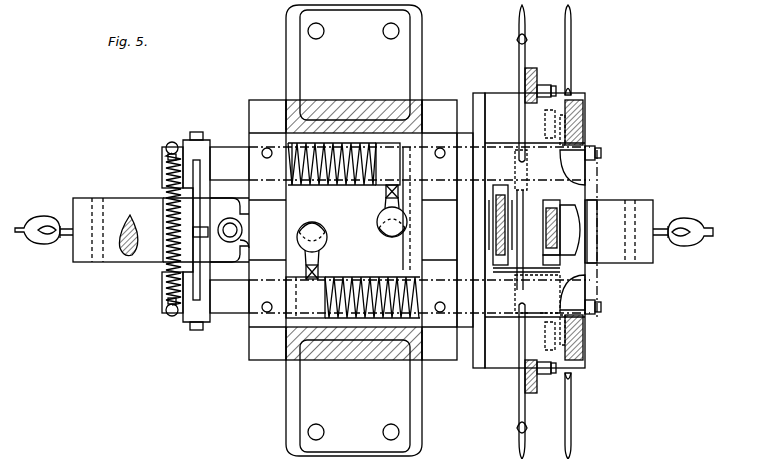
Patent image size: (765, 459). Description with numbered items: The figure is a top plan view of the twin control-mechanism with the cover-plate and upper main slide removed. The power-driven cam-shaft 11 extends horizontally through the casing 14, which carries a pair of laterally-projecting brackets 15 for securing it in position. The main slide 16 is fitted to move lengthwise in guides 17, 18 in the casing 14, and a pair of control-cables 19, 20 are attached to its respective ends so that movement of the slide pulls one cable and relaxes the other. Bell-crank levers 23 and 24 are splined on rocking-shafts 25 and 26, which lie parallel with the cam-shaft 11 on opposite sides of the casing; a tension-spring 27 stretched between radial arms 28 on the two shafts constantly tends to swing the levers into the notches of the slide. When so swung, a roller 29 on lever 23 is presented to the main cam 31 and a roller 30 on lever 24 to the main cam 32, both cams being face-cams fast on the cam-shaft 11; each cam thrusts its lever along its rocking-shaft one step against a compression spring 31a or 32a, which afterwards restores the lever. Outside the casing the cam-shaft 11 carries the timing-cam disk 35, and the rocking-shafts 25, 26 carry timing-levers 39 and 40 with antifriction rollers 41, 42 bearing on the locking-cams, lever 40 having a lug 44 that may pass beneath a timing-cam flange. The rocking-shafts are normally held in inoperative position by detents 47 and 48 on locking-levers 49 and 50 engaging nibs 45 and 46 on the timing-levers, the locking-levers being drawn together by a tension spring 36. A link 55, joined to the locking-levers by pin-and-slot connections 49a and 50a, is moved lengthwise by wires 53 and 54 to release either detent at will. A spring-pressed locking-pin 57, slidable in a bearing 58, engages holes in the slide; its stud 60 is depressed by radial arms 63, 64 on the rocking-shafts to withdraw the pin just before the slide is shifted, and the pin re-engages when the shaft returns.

The power-driven cam-shaft 11 is at (130, 262).
The casing 14 is at (364, 122).
The laterally-projecting brackets 15 is at (400, 47).
The upper main slide 16 is at (124, 198).
The guide 17 is at (267, 230).
The guide 18 is at (439, 230).
The control-cable 19 is at (22, 225).
The control-cable 20 is at (685, 220).
The bell-crank lever 23 is at (319, 273).
The bell-crank lever 24 is at (386, 193).
The rocking-shaft 25 is at (228, 312).
The rocking-shaft 26 is at (226, 154).
The tension-spring 27 is at (166, 232).
The radial arms 28 is at (172, 142).
The roller 29 is at (330, 229).
The roller 30 is at (383, 240).
The main cam 31 is at (310, 200).
The spring 31a is at (362, 320).
The main cam 32 is at (410, 264).
The spring 32a is at (314, 142).
The timing-cam disk 35 is at (530, 296).
The tension spring 36 is at (596, 210).
The timing-lever 39 is at (523, 268).
The timing-lever 40 is at (586, 236).
The antifriction roller 41 is at (503, 188).
The antifriction roller 42 is at (588, 257).
The laterally-projecting lug 44 is at (545, 200).
The nib 45 is at (585, 290).
The nib 46 is at (590, 178).
The detent 47 is at (600, 310).
The detent 48 is at (600, 154).
The locking-lever 49 is at (590, 348).
The pin-and-slot connection 49a is at (588, 330).
The locking-lever 50 is at (580, 118).
The pin-and-slot connection 50a is at (586, 132).
The wire 53 is at (572, 448).
The wire 54 is at (572, 14).
The link 55 is at (575, 193).
The locking-pin 57 is at (240, 222).
The bearing 58 is at (246, 250).
The stud 60 is at (194, 223).
The radial arm 63 is at (205, 272).
The radial arm 64 is at (206, 192).